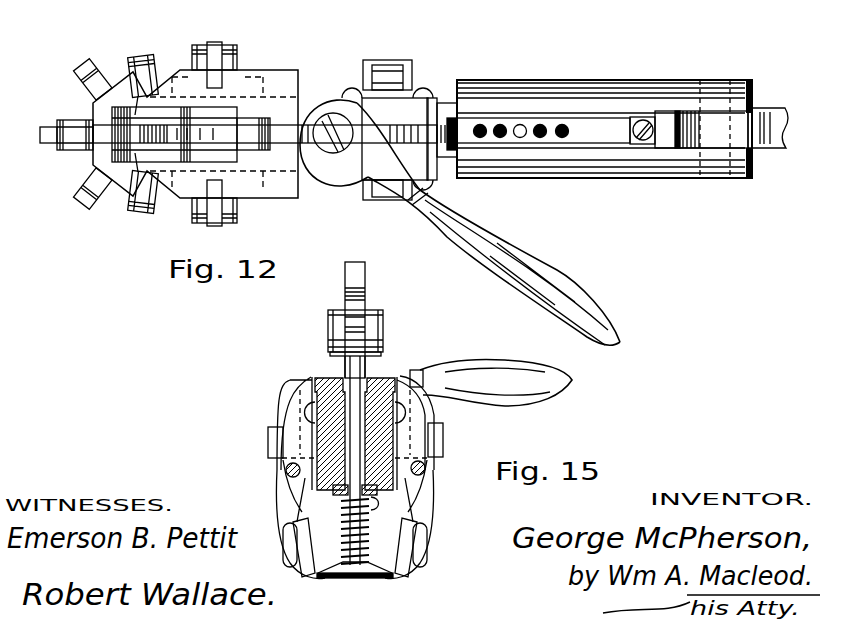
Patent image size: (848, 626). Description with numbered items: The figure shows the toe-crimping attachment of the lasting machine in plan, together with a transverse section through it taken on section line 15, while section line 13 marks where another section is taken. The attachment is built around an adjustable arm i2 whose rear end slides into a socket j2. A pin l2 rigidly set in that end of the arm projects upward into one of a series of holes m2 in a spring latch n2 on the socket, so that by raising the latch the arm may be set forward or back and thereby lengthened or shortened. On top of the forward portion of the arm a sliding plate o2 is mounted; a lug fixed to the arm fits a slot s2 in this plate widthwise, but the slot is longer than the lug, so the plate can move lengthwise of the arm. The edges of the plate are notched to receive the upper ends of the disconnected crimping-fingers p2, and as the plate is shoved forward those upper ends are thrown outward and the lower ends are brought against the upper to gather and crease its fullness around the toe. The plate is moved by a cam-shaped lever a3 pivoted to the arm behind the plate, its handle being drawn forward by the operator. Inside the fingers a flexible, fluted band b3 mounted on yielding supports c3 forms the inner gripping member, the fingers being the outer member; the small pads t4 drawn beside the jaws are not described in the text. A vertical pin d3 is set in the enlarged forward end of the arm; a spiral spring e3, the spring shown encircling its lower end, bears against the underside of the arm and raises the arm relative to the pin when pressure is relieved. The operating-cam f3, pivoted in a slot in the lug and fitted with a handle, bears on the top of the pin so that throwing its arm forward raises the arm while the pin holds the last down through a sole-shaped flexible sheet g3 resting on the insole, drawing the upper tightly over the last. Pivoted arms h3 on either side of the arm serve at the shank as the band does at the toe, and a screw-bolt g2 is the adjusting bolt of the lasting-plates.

In FIG. 12, the sliding plate o2 is at (268, 71).
In FIG. 15, the sliding plate o2 is at (290, 380).
In FIG. 12, the crimping-fingers p2 is at (213, 44).
In FIG. 15, the crimping-fingers p2 is at (284, 497).
In FIG. 12, the section line 15 15 is at (142, 56).
In FIG. 12, the section line 13 13 is at (33, 135).
In FIG. 12, the operating-cam f3 is at (95, 126).
In FIG. 15, the operating-cam f3 is at (367, 303).
In FIG. 12, the screw-bolt g2 is at (174, 132).
In FIG. 15, the screw-bolt g2 is at (383, 350).
In FIG. 12, the slot s2 is at (250, 117).
In FIG. 15, the slot s2 is at (340, 377).
In FIG. 12, the adjustable arm i2 is at (395, 139).
In FIG. 12, the pivoted arms h3 is at (387, 60).
In FIG. 12, the lever a3 is at (495, 232).
In FIG. 15, the lever a3 is at (493, 365).
In FIG. 12, the socket j2 is at (648, 79).
In FIG. 12, the spring latch n2 is at (543, 130).
In FIG. 12, the pin l2 is at (521, 124).
In FIG. 12, the holes m2 is at (546, 113).
In FIG. 15, the pin d3 is at (367, 373).
In FIG. 15, the yielding supports c3 is at (356, 501).
In FIG. 15, the spiral spring e3 is at (381, 502).
In FIG. 15, the jaw pads t4 is at (297, 538).
In FIG. 15, the flexible band b3 is at (308, 559).
In FIG. 15, the flexible sheet of metal g3 is at (387, 578).
In FIG. 15, the spiral spring is at (355, 531).